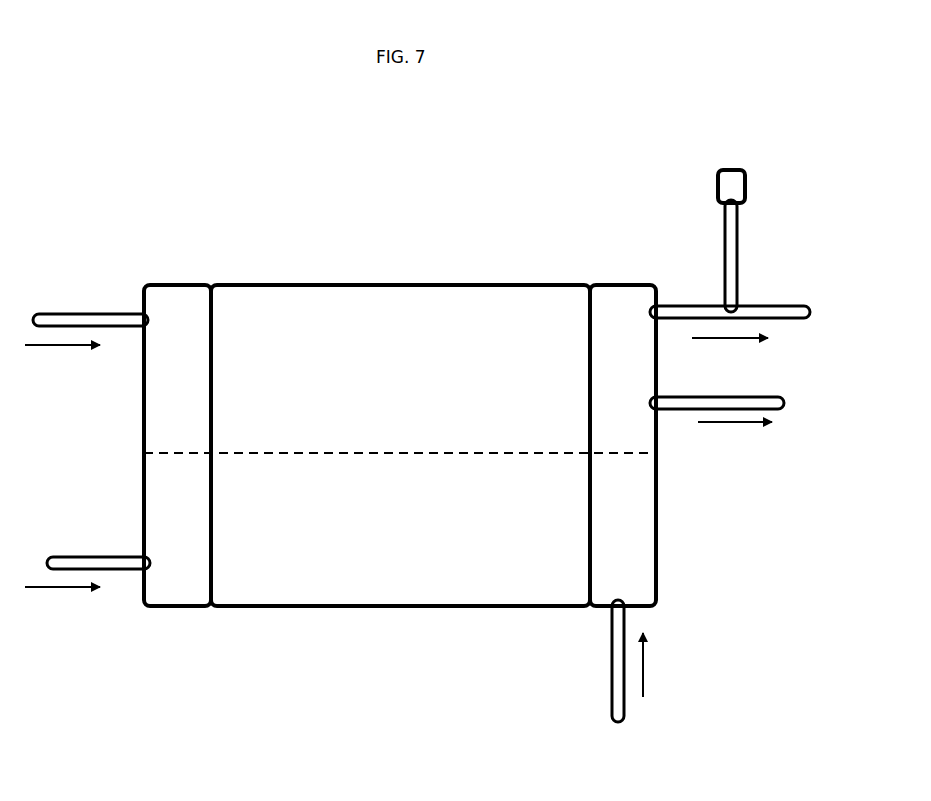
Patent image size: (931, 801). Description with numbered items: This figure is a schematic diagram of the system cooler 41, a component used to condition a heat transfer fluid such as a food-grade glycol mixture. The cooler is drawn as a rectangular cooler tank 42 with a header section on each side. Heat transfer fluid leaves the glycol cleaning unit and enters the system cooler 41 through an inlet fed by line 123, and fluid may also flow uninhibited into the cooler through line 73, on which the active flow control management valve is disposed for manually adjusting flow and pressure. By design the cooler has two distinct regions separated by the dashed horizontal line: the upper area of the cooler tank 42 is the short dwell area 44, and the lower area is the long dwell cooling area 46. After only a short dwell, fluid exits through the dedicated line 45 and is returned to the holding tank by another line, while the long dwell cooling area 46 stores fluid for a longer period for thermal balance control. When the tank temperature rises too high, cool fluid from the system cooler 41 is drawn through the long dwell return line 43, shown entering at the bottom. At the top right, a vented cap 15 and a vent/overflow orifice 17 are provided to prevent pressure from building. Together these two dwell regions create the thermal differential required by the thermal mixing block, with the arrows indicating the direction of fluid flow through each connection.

The system cooler 41 is at (268, 135).
The cooler tank 42 is at (378, 583).
The short dwell area 44 is at (165, 428).
The long dwell cooling area 46 is at (637, 503).
The line 123 is at (80, 316).
The line 73 is at (97, 557).
The vent/overflow orifice 17 is at (708, 312).
The vented cap 15 is at (731, 183).
The dedicated line 45 is at (688, 400).
The long dwell return line 43 is at (617, 688).